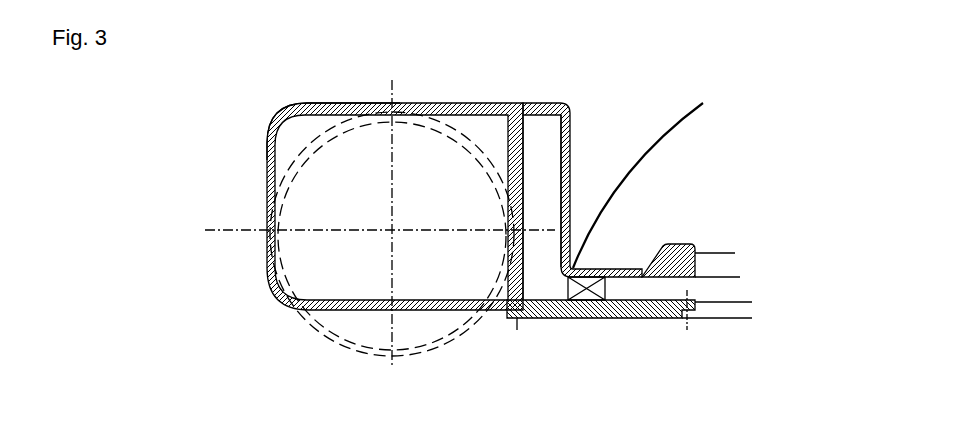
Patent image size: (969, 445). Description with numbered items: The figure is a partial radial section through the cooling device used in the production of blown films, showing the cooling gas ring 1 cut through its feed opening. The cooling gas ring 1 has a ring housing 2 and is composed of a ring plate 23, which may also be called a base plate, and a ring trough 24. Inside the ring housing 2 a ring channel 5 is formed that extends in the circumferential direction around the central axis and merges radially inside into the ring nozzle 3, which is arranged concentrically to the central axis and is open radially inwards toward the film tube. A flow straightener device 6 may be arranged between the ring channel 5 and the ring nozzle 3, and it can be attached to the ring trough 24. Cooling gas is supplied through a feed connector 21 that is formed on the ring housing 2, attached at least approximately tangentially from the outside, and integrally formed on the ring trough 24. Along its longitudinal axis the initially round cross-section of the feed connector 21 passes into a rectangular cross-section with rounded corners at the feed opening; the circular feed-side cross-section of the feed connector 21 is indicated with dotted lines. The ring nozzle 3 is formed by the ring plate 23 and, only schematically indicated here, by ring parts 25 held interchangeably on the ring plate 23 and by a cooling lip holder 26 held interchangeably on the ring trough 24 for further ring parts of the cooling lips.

The cooling gas ring 1 is at (470, 95).
The ring housing 2 is at (540, 103).
The ring nozzle 3 is at (643, 291).
The ring channel 5 is at (550, 177).
The flow straightener device 6 is at (598, 277).
The feed connector 21 is at (333, 103).
The ring plate 23 is at (615, 316).
The ring trough 24 is at (648, 179).
The ring parts 25 is at (733, 316).
The cooling lip holder 26 is at (718, 257).